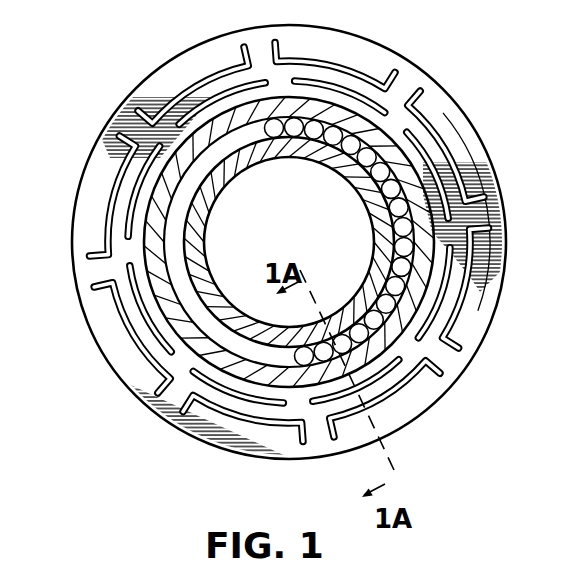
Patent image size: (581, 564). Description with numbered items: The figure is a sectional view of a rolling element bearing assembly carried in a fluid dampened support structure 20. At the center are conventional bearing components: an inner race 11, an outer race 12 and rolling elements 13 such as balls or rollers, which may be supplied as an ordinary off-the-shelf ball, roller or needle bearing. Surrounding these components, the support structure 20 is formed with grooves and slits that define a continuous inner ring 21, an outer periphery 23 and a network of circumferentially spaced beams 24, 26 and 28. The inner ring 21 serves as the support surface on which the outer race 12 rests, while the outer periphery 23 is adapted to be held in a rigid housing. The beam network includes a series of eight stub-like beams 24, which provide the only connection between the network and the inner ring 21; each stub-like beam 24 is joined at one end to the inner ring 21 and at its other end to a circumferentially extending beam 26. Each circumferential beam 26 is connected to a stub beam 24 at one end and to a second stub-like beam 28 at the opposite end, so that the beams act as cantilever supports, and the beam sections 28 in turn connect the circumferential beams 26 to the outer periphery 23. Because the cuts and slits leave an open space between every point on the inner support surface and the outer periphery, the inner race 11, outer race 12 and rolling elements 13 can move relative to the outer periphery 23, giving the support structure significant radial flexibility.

The inner race 11 is at (202, 233).
The outer race 12 is at (246, 120).
The rolling elements 13 is at (386, 190).
The fluid dampened support structure 20 is at (506, 288).
The inner ring 21 is at (423, 164).
The outer periphery 23 is at (377, 61).
The stub-like beams 24 is at (173, 363).
The circumferentially extending beams 26 is at (133, 318).
The second stub-like beams 28 is at (90, 268).